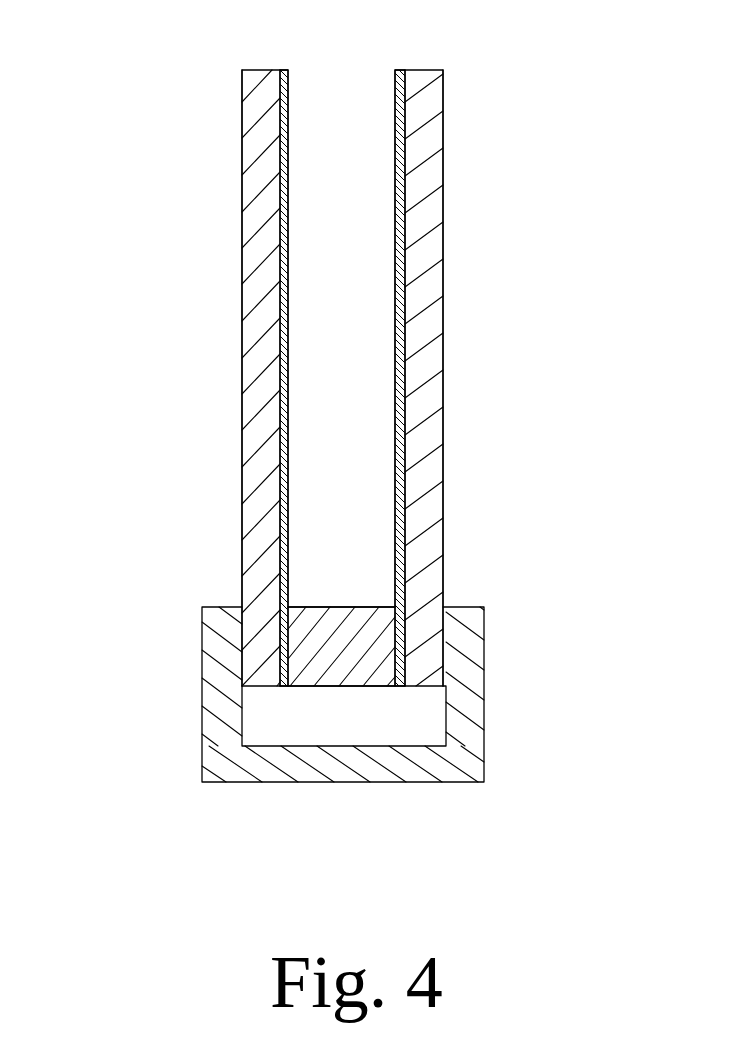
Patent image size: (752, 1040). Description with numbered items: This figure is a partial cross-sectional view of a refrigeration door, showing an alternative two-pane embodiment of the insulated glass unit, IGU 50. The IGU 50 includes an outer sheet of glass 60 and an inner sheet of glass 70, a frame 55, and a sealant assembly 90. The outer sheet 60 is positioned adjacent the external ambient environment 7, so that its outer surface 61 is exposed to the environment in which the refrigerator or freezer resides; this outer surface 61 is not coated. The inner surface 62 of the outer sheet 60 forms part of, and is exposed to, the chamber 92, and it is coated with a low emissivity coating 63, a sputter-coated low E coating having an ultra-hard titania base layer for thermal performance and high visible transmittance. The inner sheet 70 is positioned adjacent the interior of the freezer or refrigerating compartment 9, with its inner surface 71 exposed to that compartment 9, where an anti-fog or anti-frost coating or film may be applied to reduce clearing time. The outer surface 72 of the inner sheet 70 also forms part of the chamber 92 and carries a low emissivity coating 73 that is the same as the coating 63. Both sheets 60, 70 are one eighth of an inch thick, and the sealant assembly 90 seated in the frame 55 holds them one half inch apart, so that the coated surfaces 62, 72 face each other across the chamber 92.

The IGU 50 is at (545, 508).
The frame 55 is at (331, 767).
The outer sheet of glass 60 is at (241, 369).
The outer surface of the outer sheet 61 is at (238, 328).
The inner surface of the outer sheet 62 is at (285, 82).
The low emissivity coating 63 is at (287, 153).
The inner sheet of glass 70 is at (437, 347).
The inner surface of the inner sheet 71 is at (446, 288).
The outer surface of the inner sheet 72 is at (402, 192).
The low emissivity coating 73 is at (400, 268).
The sealant assembly 90 is at (325, 606).
The chamber 92 is at (360, 474).
The external ambient environment 7 is at (70, 390).
The refrigerating compartment 9 is at (672, 392).